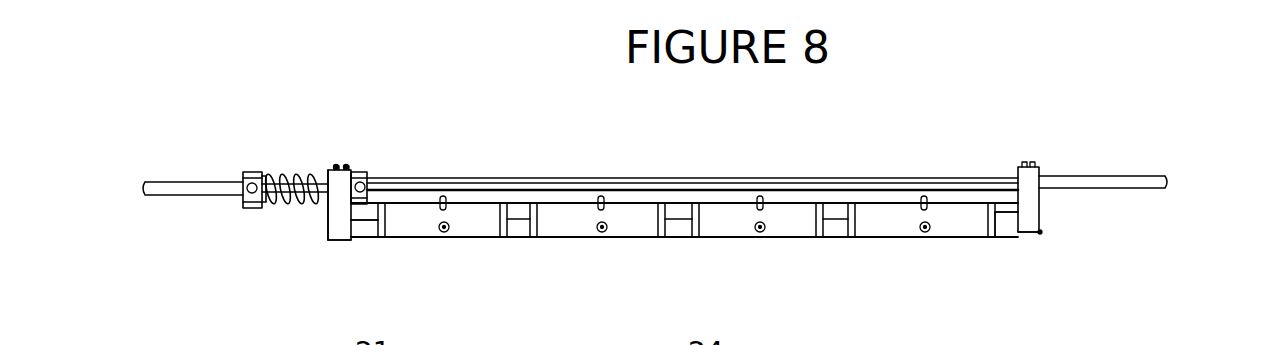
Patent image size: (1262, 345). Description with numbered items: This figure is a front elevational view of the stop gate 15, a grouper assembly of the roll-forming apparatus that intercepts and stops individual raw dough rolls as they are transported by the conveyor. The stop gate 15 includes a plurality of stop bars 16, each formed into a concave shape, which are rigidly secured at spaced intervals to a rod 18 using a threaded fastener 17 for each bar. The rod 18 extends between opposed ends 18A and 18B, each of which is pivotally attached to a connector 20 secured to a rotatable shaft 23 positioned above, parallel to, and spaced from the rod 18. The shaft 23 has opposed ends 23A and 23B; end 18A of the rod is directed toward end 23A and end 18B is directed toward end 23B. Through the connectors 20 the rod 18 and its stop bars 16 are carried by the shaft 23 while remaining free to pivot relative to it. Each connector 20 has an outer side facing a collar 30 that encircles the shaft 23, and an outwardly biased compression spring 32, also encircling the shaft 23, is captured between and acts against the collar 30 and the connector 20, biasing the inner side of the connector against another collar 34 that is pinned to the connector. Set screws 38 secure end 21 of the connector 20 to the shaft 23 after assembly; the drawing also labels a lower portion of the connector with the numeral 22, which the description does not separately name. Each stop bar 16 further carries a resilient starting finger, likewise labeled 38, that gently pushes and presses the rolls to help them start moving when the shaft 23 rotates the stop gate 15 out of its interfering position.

The stop gate 15 is at (962, 162).
The stop bars 16 is at (480, 228).
The threaded fastener 17 is at (448, 233).
The rod 18 is at (681, 237).
The end of rod 18A is at (368, 238).
The end of rod 18B is at (1013, 238).
The connector 20 is at (330, 207).
The end of connector 21 is at (330, 169).
The mounting bracket 22 is at (340, 241).
The rotatable shaft 23 is at (688, 178).
The end of shaft 23A is at (157, 181).
The end of shaft 23B is at (1159, 177).
The collar 30 is at (254, 172).
The compression spring 32 is at (292, 172).
The collar 34 is at (372, 171).
The set screws 38 is at (346, 167).